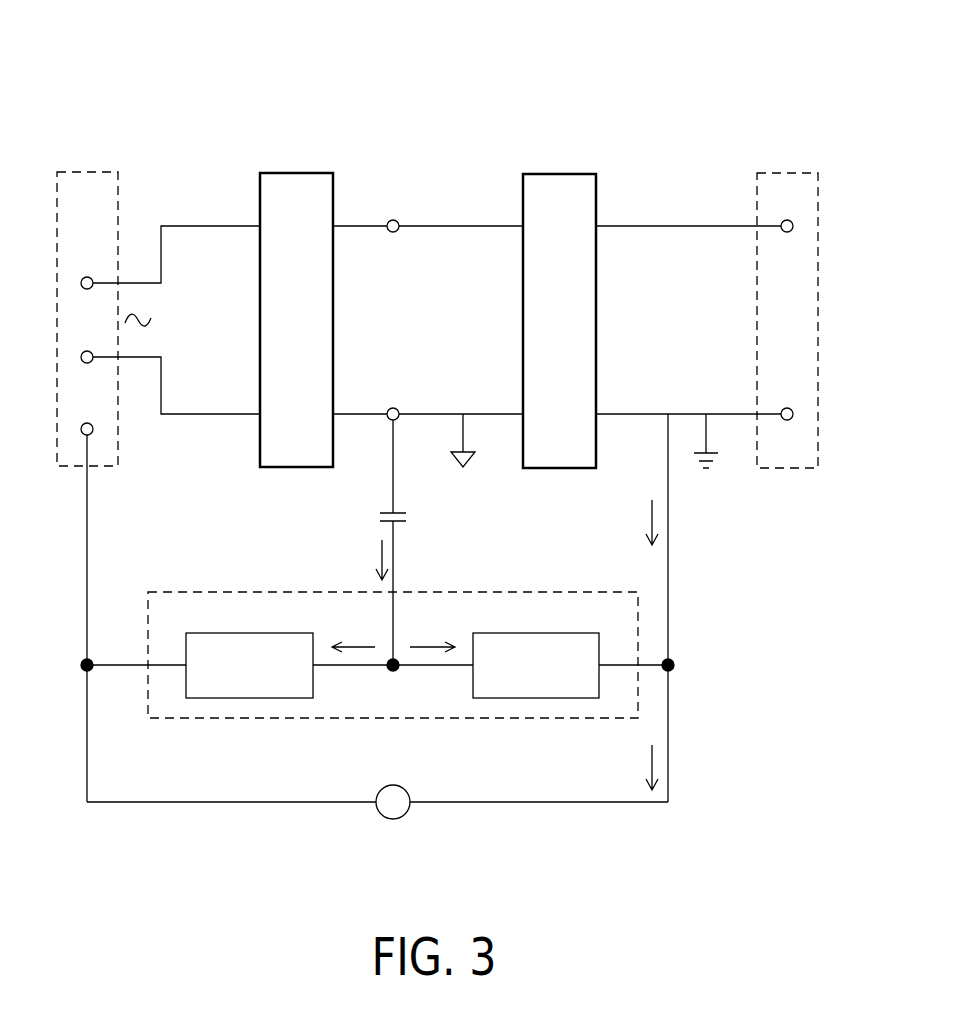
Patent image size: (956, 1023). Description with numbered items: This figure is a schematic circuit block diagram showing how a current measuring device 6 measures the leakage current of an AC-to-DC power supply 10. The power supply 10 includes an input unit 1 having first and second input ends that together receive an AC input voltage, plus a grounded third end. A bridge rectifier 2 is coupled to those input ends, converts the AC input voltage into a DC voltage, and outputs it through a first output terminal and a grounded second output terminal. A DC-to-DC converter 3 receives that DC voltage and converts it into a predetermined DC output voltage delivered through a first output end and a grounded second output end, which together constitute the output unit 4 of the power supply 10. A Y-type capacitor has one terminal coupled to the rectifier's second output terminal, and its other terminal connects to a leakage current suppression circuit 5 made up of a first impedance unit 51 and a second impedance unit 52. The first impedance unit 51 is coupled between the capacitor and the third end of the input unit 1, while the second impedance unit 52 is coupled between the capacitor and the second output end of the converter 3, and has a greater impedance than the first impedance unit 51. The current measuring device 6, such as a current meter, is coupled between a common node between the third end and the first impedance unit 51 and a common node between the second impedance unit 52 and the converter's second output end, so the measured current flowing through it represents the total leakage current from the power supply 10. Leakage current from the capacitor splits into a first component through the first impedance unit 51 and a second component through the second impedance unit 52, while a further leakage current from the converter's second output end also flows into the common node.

The AC-to-DC power supply 10 is at (172, 36).
The input unit 1 is at (95, 172).
The bridge rectifier 2 is at (299, 173).
The DC-to-DC converter 3 is at (561, 174).
The output unit 4 is at (784, 173).
The leakage current suppression circuit 5 is at (430, 720).
The first impedance unit 51 is at (248, 698).
The second impedance unit 52 is at (549, 698).
The current measuring device 6 is at (403, 817).